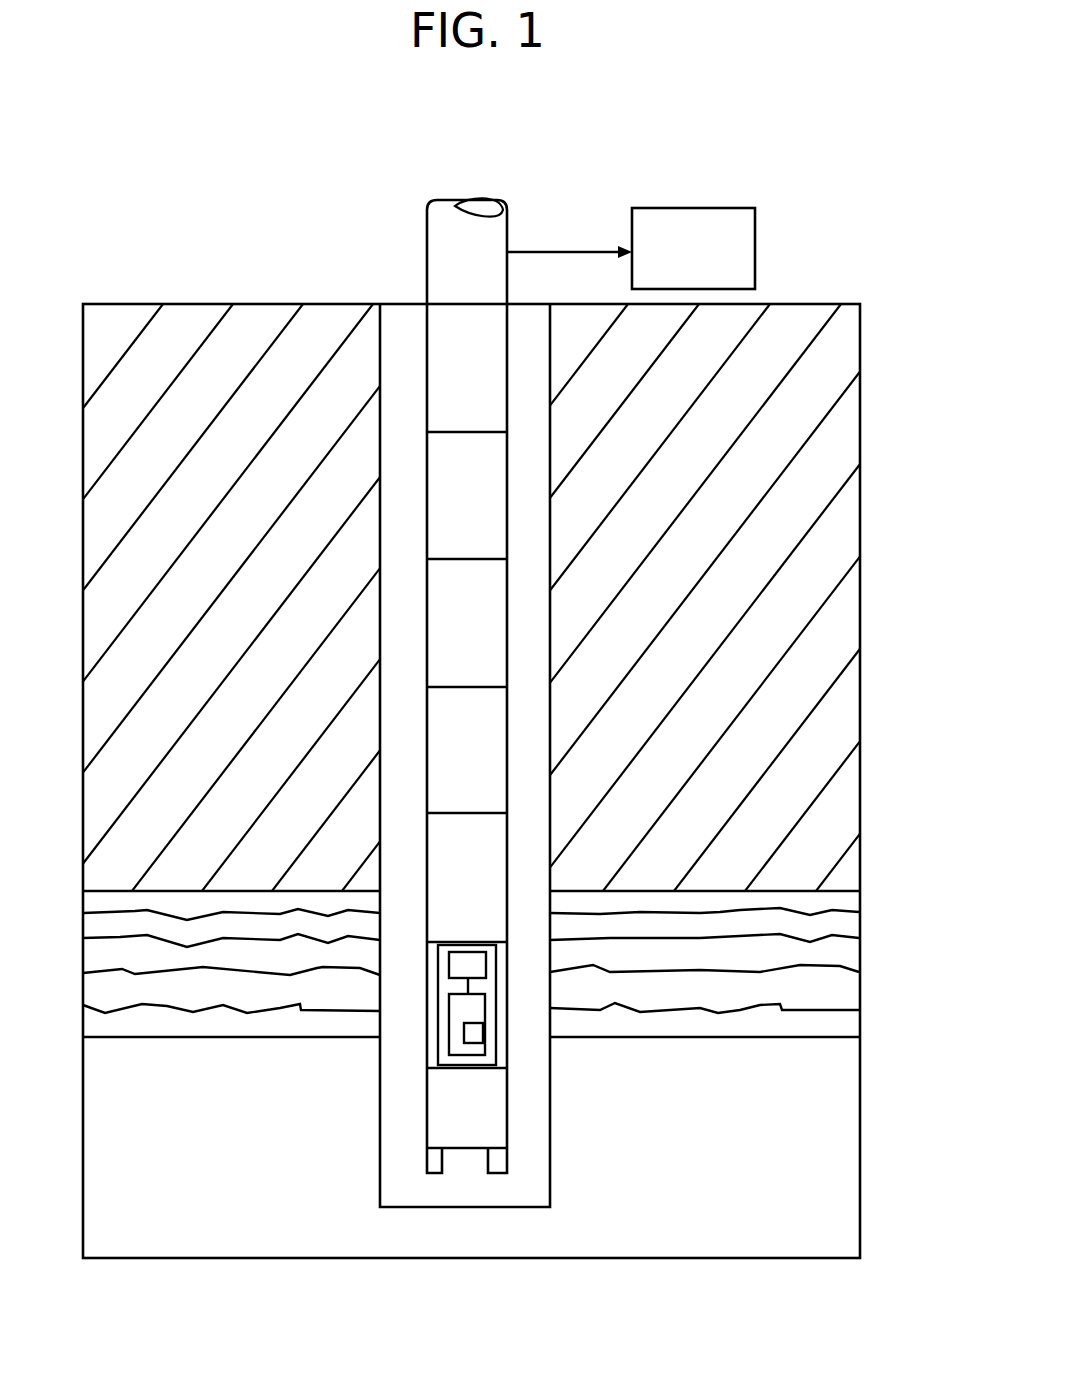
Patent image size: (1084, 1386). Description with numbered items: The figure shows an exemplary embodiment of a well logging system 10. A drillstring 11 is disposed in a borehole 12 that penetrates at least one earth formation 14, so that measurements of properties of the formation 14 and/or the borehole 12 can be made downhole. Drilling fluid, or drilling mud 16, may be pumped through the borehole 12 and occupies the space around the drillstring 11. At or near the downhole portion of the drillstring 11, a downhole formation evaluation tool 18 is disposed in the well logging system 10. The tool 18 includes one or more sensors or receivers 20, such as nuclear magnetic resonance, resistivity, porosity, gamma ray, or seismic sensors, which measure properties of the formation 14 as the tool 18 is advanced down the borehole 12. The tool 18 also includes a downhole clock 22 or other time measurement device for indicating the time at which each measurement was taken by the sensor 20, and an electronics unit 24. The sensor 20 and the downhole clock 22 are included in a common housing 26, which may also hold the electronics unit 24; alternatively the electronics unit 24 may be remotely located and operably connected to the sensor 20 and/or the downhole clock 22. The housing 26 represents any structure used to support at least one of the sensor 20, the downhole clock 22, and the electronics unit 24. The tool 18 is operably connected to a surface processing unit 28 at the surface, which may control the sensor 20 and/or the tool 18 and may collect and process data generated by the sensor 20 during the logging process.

The well logging system 10 is at (390, 197).
The drillstring 11 is at (507, 587).
The borehole 12 is at (405, 330).
The earth formation 14 is at (728, 955).
The drilling mud 16 is at (418, 420).
The downhole formation evaluation tool 18 is at (502, 1053).
The sensor 20 is at (465, 1003).
The downhole clock 22 is at (464, 1042).
The electronics unit 24 is at (471, 965).
The housing 26 is at (437, 1053).
The surface processing unit 28 is at (758, 253).